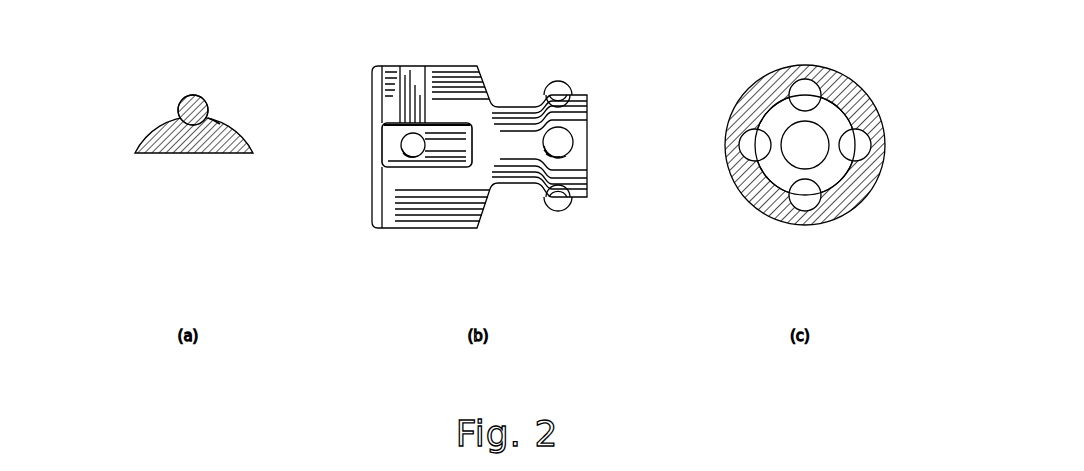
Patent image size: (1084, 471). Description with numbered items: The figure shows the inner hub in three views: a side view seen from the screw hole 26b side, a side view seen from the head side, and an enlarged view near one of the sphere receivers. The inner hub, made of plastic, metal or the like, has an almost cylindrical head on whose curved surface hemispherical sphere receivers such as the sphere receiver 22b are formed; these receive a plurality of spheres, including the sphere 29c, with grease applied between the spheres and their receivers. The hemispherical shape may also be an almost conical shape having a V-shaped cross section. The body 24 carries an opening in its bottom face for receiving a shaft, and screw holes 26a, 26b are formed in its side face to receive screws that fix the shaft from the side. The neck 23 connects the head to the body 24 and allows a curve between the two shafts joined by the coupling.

The sphere receiver 22b is at (862, 135).
The neck 23 is at (482, 239).
The body 24 is at (375, 239).
The screw hole 26a is at (402, 78).
The screw hole 26b is at (392, 138).
The sphere 29c is at (800, 223).